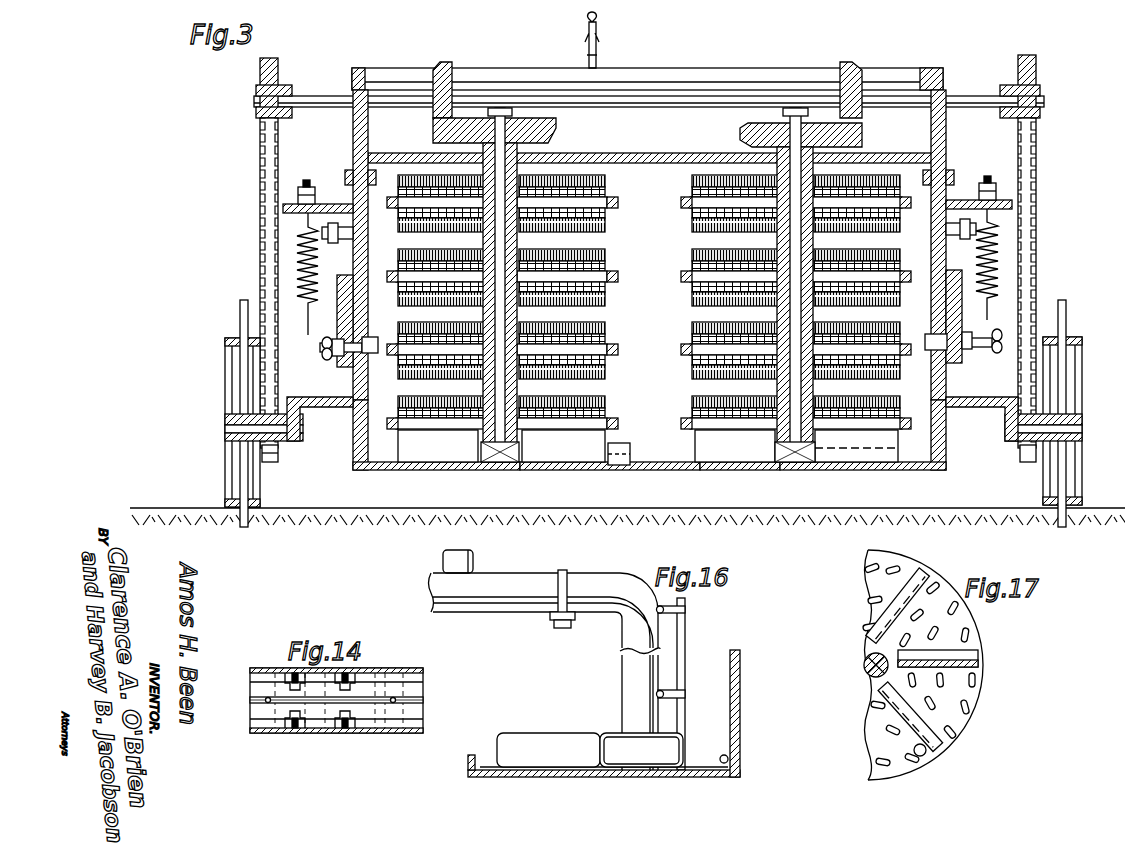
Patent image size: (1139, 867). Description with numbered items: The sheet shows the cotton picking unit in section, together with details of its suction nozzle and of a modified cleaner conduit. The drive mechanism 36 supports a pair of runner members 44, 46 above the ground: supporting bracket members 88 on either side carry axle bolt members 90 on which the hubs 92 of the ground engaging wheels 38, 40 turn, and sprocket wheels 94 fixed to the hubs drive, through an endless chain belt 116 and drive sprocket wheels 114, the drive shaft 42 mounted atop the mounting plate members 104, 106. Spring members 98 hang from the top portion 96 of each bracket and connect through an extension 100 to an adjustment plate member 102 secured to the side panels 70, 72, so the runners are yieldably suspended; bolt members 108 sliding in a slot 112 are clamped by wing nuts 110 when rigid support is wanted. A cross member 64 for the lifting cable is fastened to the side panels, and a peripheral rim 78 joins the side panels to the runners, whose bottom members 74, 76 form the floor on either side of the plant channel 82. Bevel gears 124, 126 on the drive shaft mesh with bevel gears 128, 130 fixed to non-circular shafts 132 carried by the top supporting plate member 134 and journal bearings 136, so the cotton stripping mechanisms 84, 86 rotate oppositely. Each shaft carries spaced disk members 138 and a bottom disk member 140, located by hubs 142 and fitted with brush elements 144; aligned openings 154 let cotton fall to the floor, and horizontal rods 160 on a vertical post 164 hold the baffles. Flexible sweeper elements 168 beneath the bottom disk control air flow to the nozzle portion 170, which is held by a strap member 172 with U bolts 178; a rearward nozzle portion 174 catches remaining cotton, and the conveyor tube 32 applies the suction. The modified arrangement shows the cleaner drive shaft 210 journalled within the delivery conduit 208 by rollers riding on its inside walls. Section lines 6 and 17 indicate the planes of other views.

In FIG. 3, the section line 6 is at (1040, 163).
In FIG. 3, the section line 17 is at (507, 464).
In FIG. 16, the conveyor tube 32 is at (475, 557).
In FIG. 3, the drive mechanism 36 is at (649, 62).
In FIG. 3, the ground engaging wheel 38 is at (1080, 337).
In FIG. 3, the ground engaging wheel 40 is at (232, 338).
In FIG. 3, the drive shaft 42 is at (700, 96).
In FIG. 3, the runner member 44 is at (886, 472).
In FIG. 3, the runner member 46 is at (398, 472).
In FIG. 16, the runner member 46 is at (556, 764).
In FIG. 3, the cross member 64 is at (622, 70).
In FIG. 3, the side panel 70 is at (360, 425).
In FIG. 3, the side panel 72 is at (940, 431).
In FIG. 16, the side panel 72 is at (732, 712).
In FIG. 3, the bottom member 74 is at (832, 470).
In FIG. 3, the bottom member 76 is at (580, 470).
In FIG. 3, the peripheral rim 78 is at (628, 452).
In FIG. 3, the channel 82 is at (637, 462).
In FIG. 3, the cotton stripping mechanism 84 is at (620, 357).
In FIG. 17, the cotton stripping mechanism 84 is at (986, 612).
In FIG. 3, the cotton stripping mechanism 86 is at (649, 338).
In FIG. 3, the supporting bracket member 88 is at (350, 383).
In FIG. 3, the axle bolt member 90 is at (232, 427).
In FIG. 3, the hub 92 is at (250, 441).
In FIG. 3, the sprocket wheel 94 is at (275, 459).
In FIG. 3, the top portion 96 is at (319, 204).
In FIG. 3, the spring member 98 is at (297, 266).
In FIG. 3, the extension 100 is at (322, 348).
In FIG. 3, the adjustment plate member 102 is at (337, 292).
In FIG. 3, the mounting plate member 104 is at (353, 150).
In FIG. 3, the mounting plate member 106 is at (947, 141).
In FIG. 3, the bolt member 108 is at (358, 340).
In FIG. 3, the wing nut 110 is at (331, 356).
In FIG. 3, the slot 112 is at (362, 318).
In FIG. 3, the drive sprocket wheel 114 is at (262, 130).
In FIG. 3, the endless chain belt 116 is at (262, 183).
In FIG. 3, the bevel gear 124 is at (447, 72).
In FIG. 3, the bevel gear 126 is at (855, 70).
In FIG. 3, the bevel gear 128 is at (552, 132).
In FIG. 3, the bevel gear 130 is at (742, 133).
In FIG. 3, the non-circular shaft 132 is at (500, 116).
In FIG. 3, the top supporting plate member 134 is at (648, 163).
In FIG. 3, the journal bearing 136 is at (490, 463).
In FIG. 3, the disk member 138 is at (610, 203).
In FIG. 3, the bottom disk member 140 is at (614, 426).
In FIG. 17, the bottom disk member 140 is at (986, 679).
In FIG. 3, the hub 142 is at (530, 321).
In FIG. 3, the brush element 144 is at (604, 251).
In FIG. 17, the opening 154 is at (930, 741).
In FIG. 16, the horizontal rod 160 is at (672, 690).
In FIG. 16, the vertical post 164 is at (686, 622).
In FIG. 3, the flexible sweeper element 168 is at (432, 452).
In FIG. 17, the flexible sweeper element 168 is at (924, 753).
In FIG. 16, the nozzle portion 170 is at (620, 738).
In FIG. 16, the strap member 172 is at (622, 673).
In FIG. 16, the nozzle portion 174 is at (508, 748).
In FIG. 16, the U bolt 178 is at (570, 578).
In FIG. 14, the delivery conduit 208 is at (364, 733).
In FIG. 14, the cleaner drive shaft 210 is at (318, 702).